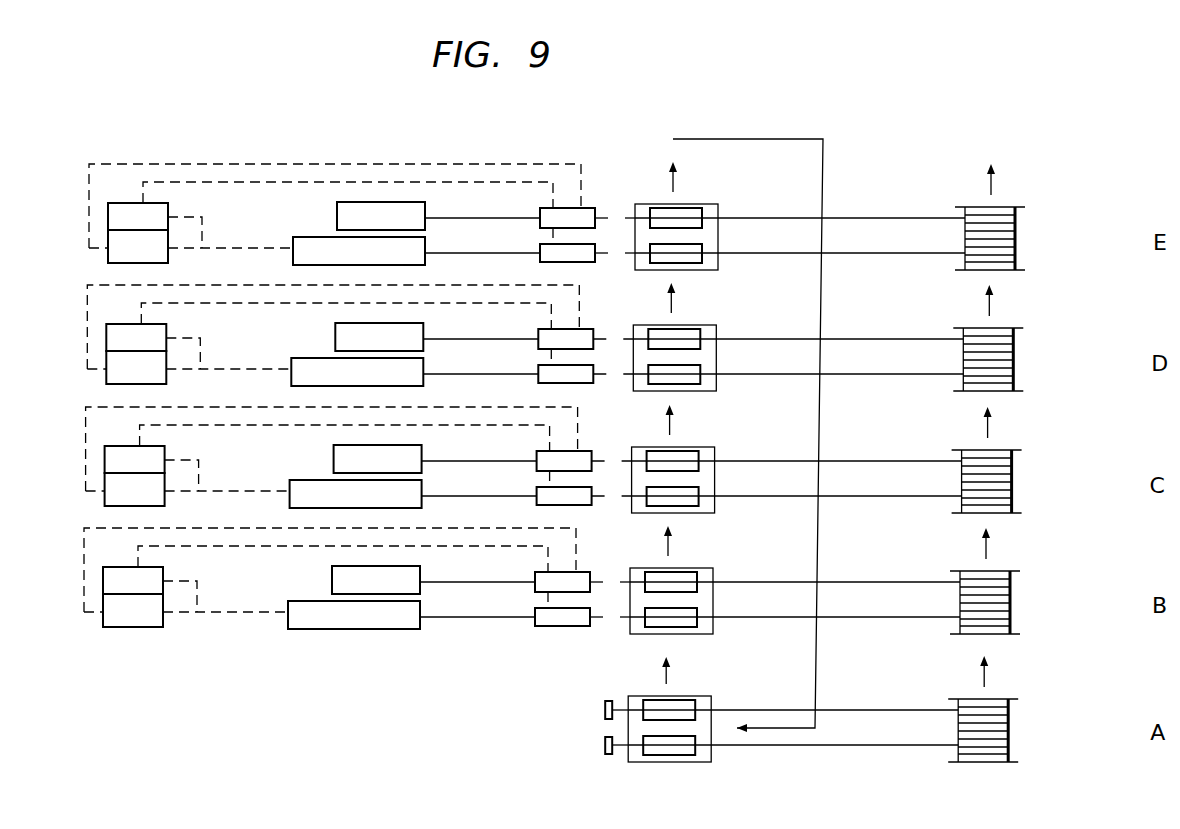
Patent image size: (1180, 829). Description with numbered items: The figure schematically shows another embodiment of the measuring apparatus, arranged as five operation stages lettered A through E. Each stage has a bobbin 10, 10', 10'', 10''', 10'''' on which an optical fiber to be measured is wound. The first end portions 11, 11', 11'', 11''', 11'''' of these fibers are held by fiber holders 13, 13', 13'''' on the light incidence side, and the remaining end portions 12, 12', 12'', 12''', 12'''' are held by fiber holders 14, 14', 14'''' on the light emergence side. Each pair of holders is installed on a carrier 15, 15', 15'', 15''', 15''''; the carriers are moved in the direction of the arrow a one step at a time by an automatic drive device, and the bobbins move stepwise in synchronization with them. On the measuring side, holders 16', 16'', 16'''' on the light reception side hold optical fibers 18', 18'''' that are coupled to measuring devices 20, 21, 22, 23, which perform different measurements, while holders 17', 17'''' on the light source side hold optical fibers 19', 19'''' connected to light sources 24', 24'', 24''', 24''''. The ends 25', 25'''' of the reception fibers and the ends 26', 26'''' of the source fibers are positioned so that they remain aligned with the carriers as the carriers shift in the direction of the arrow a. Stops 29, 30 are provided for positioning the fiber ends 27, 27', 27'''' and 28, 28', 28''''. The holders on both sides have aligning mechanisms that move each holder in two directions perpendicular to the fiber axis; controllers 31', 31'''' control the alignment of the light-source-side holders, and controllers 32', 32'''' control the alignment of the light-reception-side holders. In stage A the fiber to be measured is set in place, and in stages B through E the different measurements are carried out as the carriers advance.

The bobbin 10 is at (1003, 730).
The bobbin 10' is at (1007, 602).
The bobbin 10'' is at (1011, 481).
The bobbin 10''' is at (1015, 359).
The bobbin 10'''' is at (1020, 238).
The first end portion of optical fiber 11 is at (793, 767).
The first end portion of optical fiber 11' is at (795, 640).
The first end portion of optical fiber 11'' is at (797, 523).
The first end portion of optical fiber 11''' is at (798, 401).
The first end portion of optical fiber 11'''' is at (800, 280).
The remaining end portion of optical fiber 12 is at (793, 694).
The remaining end portion of optical fiber 12' is at (795, 564).
The remaining end portion of optical fiber 12'' is at (797, 442).
The remaining end portion of optical fiber 12''' is at (798, 320).
The remaining end portion of optical fiber 12'''' is at (800, 199).
The fiber holder 13 is at (673, 768).
The fiber holder 13' is at (677, 641).
The fiber holder 13'''' is at (692, 277).
The fiber holder 14 is at (685, 694).
The fiber holder 14' is at (682, 561).
The fiber holder 14'''' is at (694, 196).
The carrier 15 is at (694, 721).
The carrier 15' is at (699, 592).
The carrier 15'' is at (705, 468).
The carrier 15''' is at (709, 346).
The carrier 15'''' is at (714, 225).
The fiber holder 16' is at (539, 637).
The fiber holder 16'' is at (542, 509).
The fiber holder 16'''' is at (546, 267).
The fiber holder 17' is at (572, 551).
The fiber holder 17'''' is at (566, 176).
The optical fiber 18' is at (477, 643).
The optical fiber 18'''' is at (482, 267).
The optical fiber 19' is at (477, 568).
The optical fiber 19'''' is at (482, 200).
The measuring device 20 is at (349, 636).
The measuring device 21 is at (337, 503).
The measuring device 22 is at (338, 381).
The measuring device 23 is at (310, 265).
The light source 24' is at (350, 579).
The light source 24'' is at (352, 458).
The light source 24''' is at (353, 336).
The light source 24'''' is at (395, 178).
The end of optical fiber 25' is at (594, 638).
The end of optical fiber 25'''' is at (611, 277).
The end of optical fiber 26' is at (612, 551).
The end of optical fiber 26'''' is at (621, 163).
The fiber end 27 is at (612, 767).
The fiber end 27' is at (624, 642).
The fiber end 27'''' is at (644, 284).
The fiber end 28 is at (612, 691).
The fiber end 28' is at (642, 559).
The fiber end 28'''' is at (649, 175).
The stop 29 is at (586, 745).
The stop 30 is at (586, 710).
The controller 31' is at (330, 601).
The controller 31'''' is at (335, 222).
The controller 32' is at (325, 579).
The controller 32'''' is at (330, 215).
The arrow a is at (658, 594).